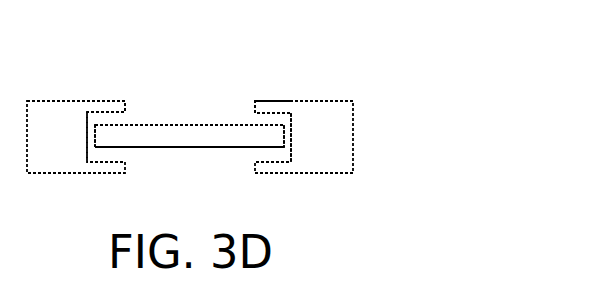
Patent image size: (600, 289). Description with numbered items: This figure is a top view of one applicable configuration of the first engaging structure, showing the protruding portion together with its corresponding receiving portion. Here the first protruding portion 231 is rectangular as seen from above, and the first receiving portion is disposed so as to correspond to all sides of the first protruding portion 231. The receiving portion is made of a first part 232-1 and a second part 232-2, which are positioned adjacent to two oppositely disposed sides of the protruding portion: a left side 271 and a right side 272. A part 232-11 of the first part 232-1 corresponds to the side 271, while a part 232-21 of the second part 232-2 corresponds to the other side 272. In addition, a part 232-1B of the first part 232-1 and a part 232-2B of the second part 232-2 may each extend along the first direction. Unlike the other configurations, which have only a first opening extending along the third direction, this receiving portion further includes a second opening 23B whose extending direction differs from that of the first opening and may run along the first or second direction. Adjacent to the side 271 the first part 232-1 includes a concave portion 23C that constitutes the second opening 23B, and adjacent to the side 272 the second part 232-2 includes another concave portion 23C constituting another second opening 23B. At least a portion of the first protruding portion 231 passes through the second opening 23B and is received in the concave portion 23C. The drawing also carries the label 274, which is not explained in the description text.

The first part of the first receiving portion 232-1 is at (43, 115).
The part of the first part 232-1B is at (120, 100).
The part of the first part 232-11 is at (82, 122).
The second part of the first receiving portion 232-2 is at (333, 125).
The part of the second part 232-2B is at (267, 103).
The part of the second part 232-21 is at (296, 123).
The first protruding portion 231 is at (193, 137).
The second opening 23B is at (253, 121).
The concave portion 23C is at (282, 155).
The side of the first protruding portion 271 is at (95, 138).
The side of the first protruding portion 272 is at (284, 140).
The lower gap 274 is at (201, 148).